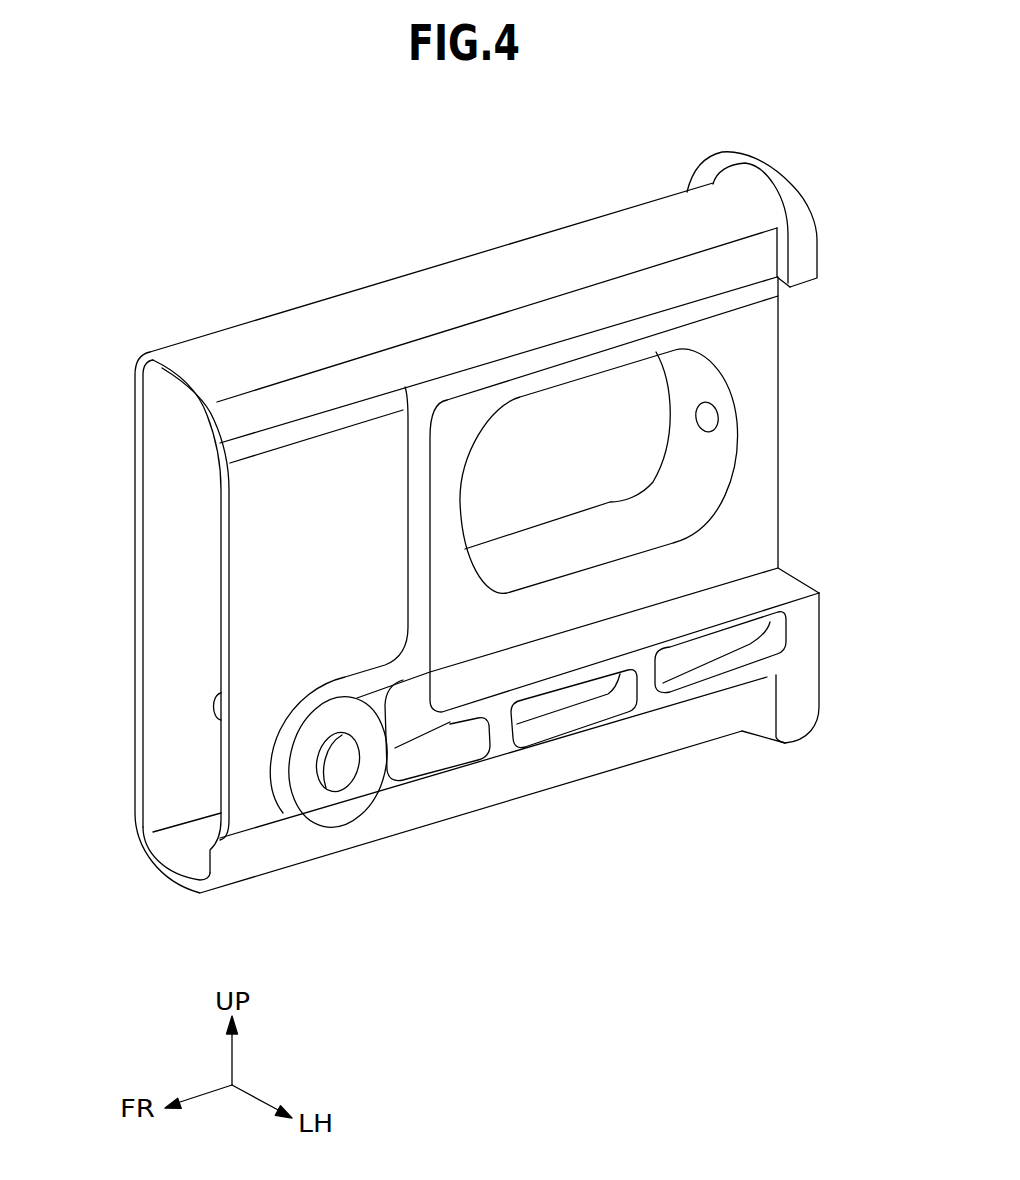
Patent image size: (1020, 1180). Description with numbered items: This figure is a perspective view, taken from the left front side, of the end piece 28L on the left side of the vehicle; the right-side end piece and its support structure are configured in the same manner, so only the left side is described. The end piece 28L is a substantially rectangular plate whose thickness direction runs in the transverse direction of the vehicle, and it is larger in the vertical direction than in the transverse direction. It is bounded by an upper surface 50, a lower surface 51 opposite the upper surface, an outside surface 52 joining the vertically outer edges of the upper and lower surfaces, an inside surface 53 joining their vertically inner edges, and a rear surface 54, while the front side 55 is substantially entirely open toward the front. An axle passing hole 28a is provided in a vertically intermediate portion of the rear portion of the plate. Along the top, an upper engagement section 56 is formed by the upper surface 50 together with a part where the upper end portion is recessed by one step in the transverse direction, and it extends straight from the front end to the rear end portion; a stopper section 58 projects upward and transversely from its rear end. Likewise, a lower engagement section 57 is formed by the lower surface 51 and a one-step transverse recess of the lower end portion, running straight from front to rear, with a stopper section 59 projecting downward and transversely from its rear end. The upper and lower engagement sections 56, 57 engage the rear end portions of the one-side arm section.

The end piece 28L is at (290, 154).
The axle passing hole 28a is at (690, 455).
The upper surface 50 is at (413, 290).
The lower surface 51 is at (178, 885).
The outside surface 52 is at (305, 590).
The inside surface 53 is at (188, 653).
The rear surface 54 is at (780, 460).
The front side 55 is at (172, 535).
The upper engagement section 56 is at (327, 357).
The lower engagement section 57 is at (290, 853).
The stopper section 58 is at (758, 172).
The stopper section 59 is at (776, 745).